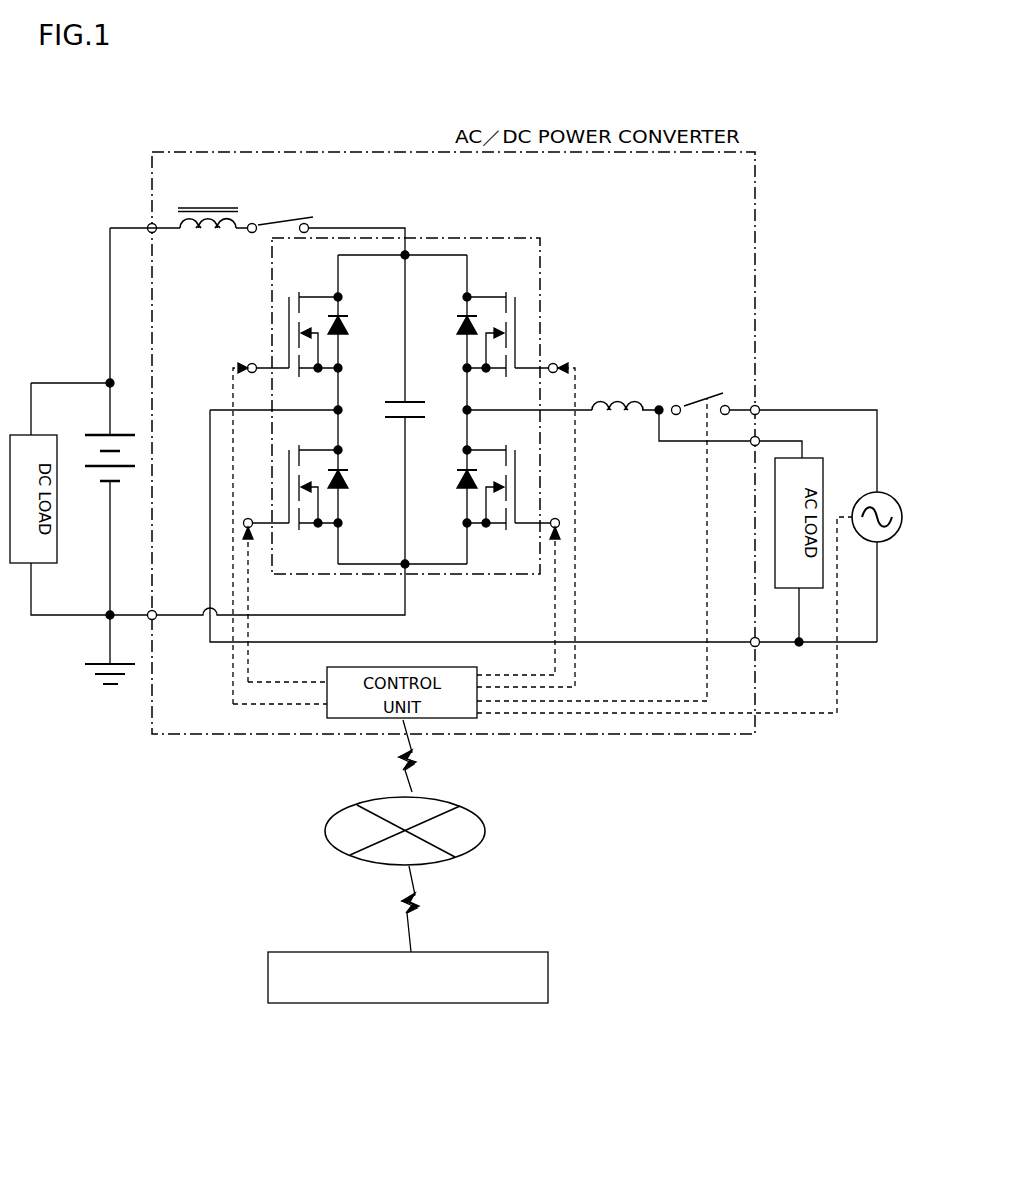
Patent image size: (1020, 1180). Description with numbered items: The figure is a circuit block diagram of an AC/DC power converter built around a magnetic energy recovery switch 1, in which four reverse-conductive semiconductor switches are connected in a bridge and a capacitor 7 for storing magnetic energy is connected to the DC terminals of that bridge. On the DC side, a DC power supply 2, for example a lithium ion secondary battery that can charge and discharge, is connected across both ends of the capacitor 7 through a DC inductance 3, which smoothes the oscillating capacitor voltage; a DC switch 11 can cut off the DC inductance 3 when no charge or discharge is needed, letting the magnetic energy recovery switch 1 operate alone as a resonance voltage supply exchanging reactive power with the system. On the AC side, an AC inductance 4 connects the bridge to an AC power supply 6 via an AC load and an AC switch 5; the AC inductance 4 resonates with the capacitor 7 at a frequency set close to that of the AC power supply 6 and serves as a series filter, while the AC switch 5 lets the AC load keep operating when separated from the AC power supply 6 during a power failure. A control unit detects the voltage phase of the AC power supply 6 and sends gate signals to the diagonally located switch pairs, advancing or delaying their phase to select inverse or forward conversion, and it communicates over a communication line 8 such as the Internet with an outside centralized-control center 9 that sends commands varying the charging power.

The magnetic energy recovery switch 1 is at (413, 388).
The DC power supply 2 is at (97, 478).
The DC inductance 3 is at (215, 237).
The AC inductance 4 is at (617, 397).
The AC switch 5 is at (698, 397).
The AC power supply 6 is at (867, 495).
The capacitor 7 is at (397, 420).
The communication line 8 is at (485, 828).
The outside centralized-control center 9 is at (550, 977).
The DC switch 11 is at (280, 220).